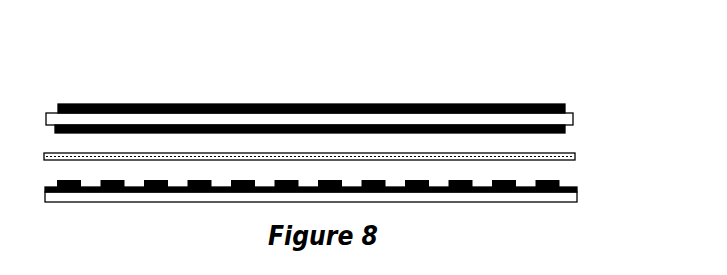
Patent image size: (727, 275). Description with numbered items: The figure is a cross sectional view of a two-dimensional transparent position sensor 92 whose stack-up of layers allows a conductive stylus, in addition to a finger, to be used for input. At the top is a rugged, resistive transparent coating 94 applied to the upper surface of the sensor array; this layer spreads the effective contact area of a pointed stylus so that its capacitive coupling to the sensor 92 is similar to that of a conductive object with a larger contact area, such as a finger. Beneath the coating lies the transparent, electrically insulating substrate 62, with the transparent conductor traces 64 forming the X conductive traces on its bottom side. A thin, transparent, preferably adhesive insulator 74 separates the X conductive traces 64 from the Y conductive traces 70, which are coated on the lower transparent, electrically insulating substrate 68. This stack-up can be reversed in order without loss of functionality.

The two-dimensional position sensor 92 is at (318, 74).
The resistive transparent coating 94 is at (558, 104).
The transparent, electrically insulating substrate 62 is at (575, 120).
The transparent conductor traces 64 is at (566, 131).
The insulator 74 is at (575, 157).
The Y conductive traces 70 is at (577, 185).
The transparent, electrically insulating substrate 68 is at (578, 200).